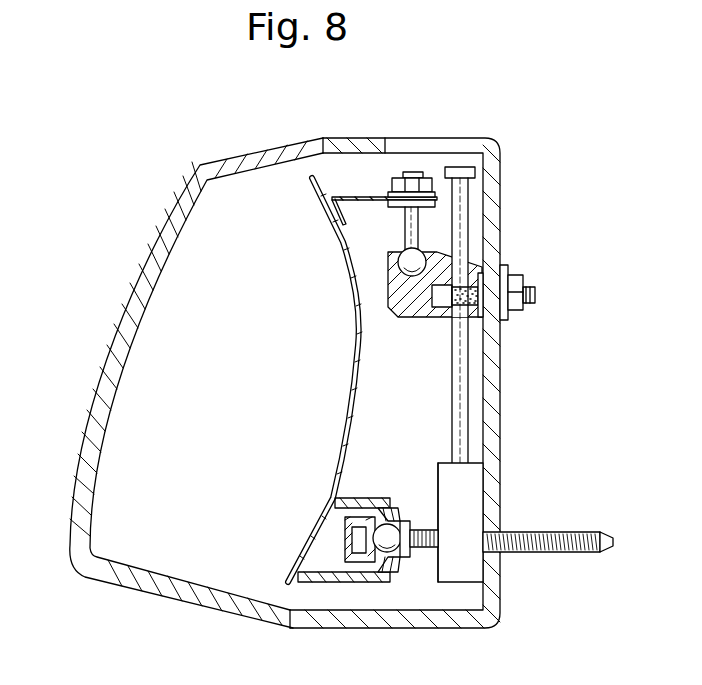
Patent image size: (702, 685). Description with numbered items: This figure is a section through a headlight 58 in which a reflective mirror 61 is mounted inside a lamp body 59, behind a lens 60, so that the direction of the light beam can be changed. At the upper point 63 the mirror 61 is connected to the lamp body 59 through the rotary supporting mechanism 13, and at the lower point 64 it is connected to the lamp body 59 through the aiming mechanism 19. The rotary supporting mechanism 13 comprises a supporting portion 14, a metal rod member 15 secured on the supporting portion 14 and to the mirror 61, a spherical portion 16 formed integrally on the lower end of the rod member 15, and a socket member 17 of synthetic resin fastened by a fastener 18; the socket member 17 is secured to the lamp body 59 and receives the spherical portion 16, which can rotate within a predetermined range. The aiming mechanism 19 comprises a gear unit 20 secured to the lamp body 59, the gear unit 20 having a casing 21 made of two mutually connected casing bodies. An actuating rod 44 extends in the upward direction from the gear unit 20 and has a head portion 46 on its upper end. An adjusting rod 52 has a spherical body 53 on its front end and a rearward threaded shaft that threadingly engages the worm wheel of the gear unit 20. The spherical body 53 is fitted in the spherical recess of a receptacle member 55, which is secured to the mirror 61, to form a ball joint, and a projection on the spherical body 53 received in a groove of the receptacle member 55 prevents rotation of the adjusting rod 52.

The rotary supporting mechanism 13 is at (440, 383).
The supporting portion 14 is at (355, 196).
The rod member 15 is at (407, 220).
The spherical portion 16 is at (400, 263).
The socket member 17 is at (407, 300).
The fastening screw shank 18 is at (417, 305).
The aiming mechanism 19 is at (525, 513).
The gear unit 20 is at (470, 495).
The casing 21 is at (473, 463).
The actuating rod 44 is at (515, 292).
The head portion 46 is at (475, 170).
The adjusting rod 52 is at (545, 555).
The spherical body 53 is at (393, 555).
The receptacle member 55 is at (358, 565).
The headlamp 58 is at (185, 383).
The lamp body 59 is at (495, 245).
The lens 60 is at (128, 292).
The reflective mirror 61 is at (343, 250).
The point 63 is at (406, 319).
The point 64 is at (368, 550).